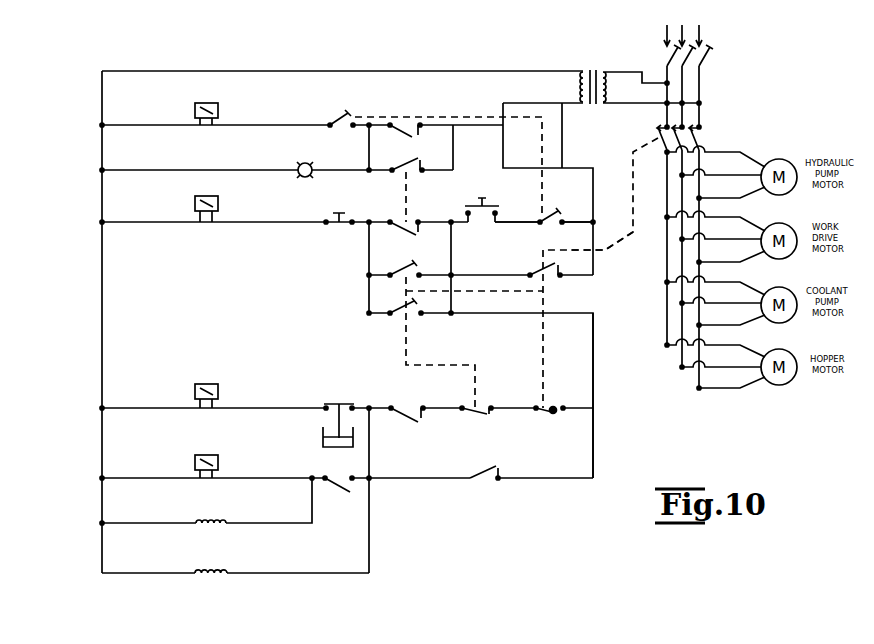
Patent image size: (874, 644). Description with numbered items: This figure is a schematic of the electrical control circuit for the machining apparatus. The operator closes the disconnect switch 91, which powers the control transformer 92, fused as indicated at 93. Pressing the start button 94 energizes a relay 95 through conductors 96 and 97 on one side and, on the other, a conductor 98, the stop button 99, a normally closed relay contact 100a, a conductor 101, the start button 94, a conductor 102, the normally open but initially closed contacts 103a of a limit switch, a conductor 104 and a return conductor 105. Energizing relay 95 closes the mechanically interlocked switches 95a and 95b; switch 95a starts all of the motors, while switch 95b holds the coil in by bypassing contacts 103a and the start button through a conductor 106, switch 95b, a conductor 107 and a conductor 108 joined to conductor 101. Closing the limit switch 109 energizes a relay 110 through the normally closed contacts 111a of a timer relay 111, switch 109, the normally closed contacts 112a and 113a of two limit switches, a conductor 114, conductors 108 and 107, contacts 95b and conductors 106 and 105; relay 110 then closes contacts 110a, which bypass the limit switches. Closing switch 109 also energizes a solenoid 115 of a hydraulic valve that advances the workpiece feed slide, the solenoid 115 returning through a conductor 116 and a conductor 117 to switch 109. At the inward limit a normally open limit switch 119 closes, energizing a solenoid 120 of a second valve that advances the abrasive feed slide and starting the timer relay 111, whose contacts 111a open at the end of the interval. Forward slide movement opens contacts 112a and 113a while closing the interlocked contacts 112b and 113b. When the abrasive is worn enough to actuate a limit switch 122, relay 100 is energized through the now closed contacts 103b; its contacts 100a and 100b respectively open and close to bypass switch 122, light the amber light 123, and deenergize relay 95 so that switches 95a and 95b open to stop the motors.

The disconnect switch 91 is at (712, 50).
The control transformer 92 is at (582, 101).
The fuse 93 is at (525, 103).
The start button 94 is at (499, 206).
The relay 95 is at (196, 203).
The switch 95a is at (710, 134).
The switch 95b is at (556, 279).
The conductor 96 is at (100, 143).
The conductor 97 is at (376, 70).
The conductor 98 is at (285, 223).
The stop button 99 is at (340, 225).
The relay 100 is at (212, 110).
The relay contact 100a is at (402, 236).
The relay contact 100b is at (398, 159).
The conductor 101 is at (451, 222).
The conductor 102 is at (517, 235).
The contacts 103a is at (548, 221).
The contacts 103b is at (332, 122).
The conductor 104 is at (575, 220).
The return conductor 105 is at (564, 107).
The conductor 106 is at (600, 252).
The conductor 107 is at (510, 274).
The conductor 108 is at (452, 260).
The limit switch 109 is at (417, 428).
The relay 110 is at (203, 384).
The contacts 110a is at (490, 486).
The timer relay 111 is at (200, 462).
The contacts 111a is at (352, 407).
The contacts 112a is at (478, 416).
The contacts 112b is at (400, 311).
The contacts 113a is at (553, 416).
The contacts 113b is at (403, 266).
The conductor 114 is at (594, 325).
The solenoid 115 is at (214, 578).
The conductor 116 is at (369, 575).
The conductor 117 is at (371, 460).
The limit switch 119 is at (332, 495).
The solenoid 120 is at (220, 522).
The limit switch 122 is at (410, 130).
The amber light 123 is at (313, 163).